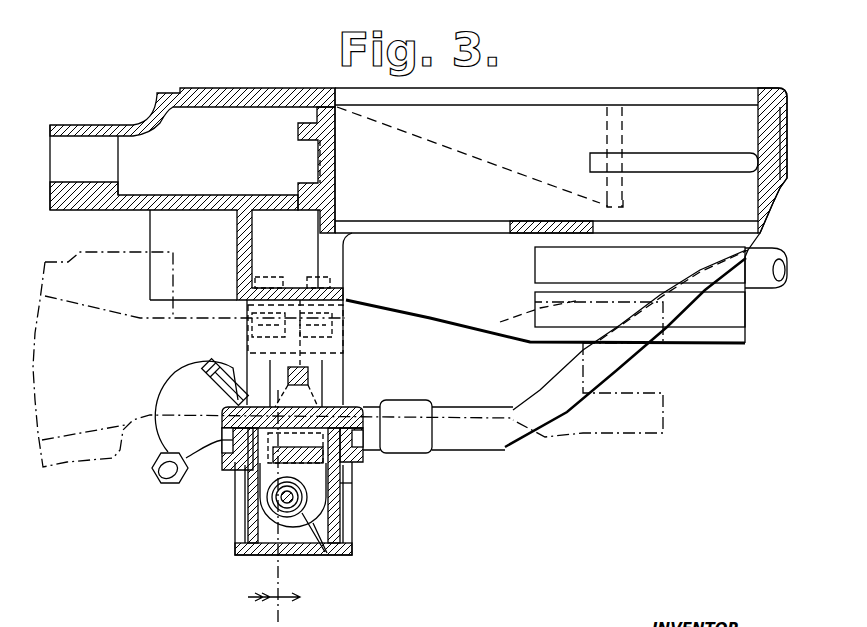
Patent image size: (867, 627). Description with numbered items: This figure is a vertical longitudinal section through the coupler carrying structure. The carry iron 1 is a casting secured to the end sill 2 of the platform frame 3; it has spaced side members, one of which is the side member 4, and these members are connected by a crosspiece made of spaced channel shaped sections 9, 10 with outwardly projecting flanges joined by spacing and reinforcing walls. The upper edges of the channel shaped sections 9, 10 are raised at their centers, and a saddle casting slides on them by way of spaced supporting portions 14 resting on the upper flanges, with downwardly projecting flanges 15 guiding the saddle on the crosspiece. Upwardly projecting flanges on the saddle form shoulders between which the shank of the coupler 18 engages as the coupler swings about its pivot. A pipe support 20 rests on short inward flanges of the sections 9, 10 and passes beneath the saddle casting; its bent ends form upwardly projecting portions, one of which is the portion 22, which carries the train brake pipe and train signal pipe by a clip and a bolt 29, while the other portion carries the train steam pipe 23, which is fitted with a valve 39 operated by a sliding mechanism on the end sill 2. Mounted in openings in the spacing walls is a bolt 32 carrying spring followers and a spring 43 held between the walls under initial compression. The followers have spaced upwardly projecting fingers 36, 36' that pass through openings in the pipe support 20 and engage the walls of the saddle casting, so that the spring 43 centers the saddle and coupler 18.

The carry iron 1 is at (343, 375).
The end sill 2 is at (272, 83).
The platform frame 3 is at (727, 103).
The side member 4 is at (125, 318).
The channel shaped section 9 is at (237, 548).
The channel shaped section 10 is at (352, 552).
The supporting portion 14 is at (200, 475).
The downwardly projecting flange 15 is at (227, 473).
The coupler 18 is at (46, 467).
The pipe support 20 is at (247, 493).
The upwardly projecting portion 22 is at (313, 393).
The train steam pipe 23 is at (505, 428).
The bolt 29 is at (307, 373).
The bolt 32 is at (305, 522).
The finger 36 is at (202, 441).
The finger 36' is at (390, 508).
The valve 39 is at (173, 400).
The spring 43 is at (325, 555).